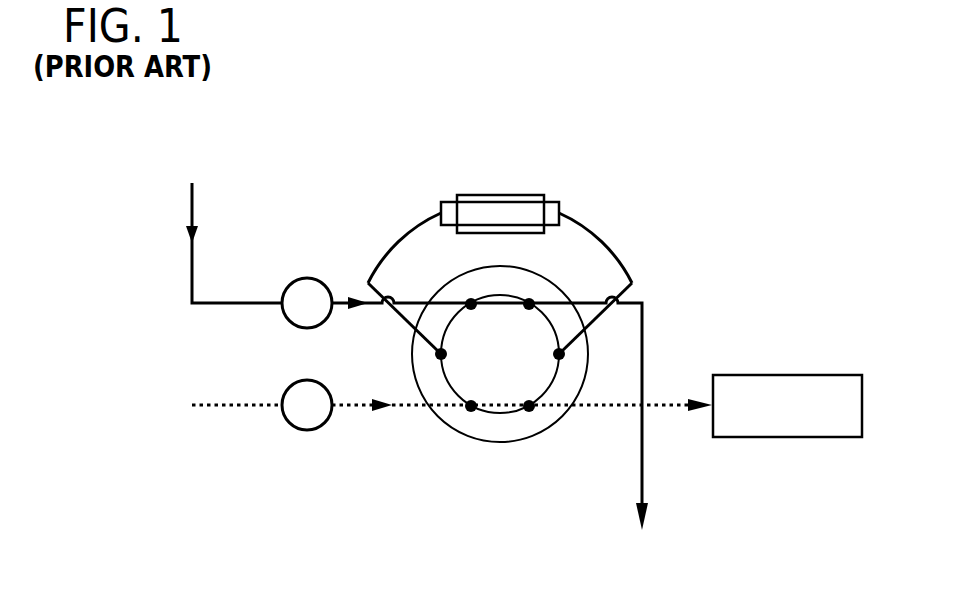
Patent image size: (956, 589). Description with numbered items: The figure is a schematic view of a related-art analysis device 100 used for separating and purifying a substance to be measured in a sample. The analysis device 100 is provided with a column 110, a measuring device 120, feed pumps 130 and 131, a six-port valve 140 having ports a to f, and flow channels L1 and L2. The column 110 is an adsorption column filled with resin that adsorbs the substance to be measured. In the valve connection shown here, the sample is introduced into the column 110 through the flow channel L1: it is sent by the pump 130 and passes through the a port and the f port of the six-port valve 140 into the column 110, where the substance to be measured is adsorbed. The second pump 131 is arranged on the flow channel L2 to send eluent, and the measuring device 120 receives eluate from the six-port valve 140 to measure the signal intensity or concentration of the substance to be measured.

The analysis device 100 is at (697, 116).
The column 110 is at (499, 205).
The measuring device 120 is at (791, 374).
The feed pump 130 is at (306, 278).
The feed pump 131 is at (307, 431).
The six-port valve 140 is at (502, 443).
The flow channel L1 is at (190, 203).
The flow channel L2 is at (212, 407).